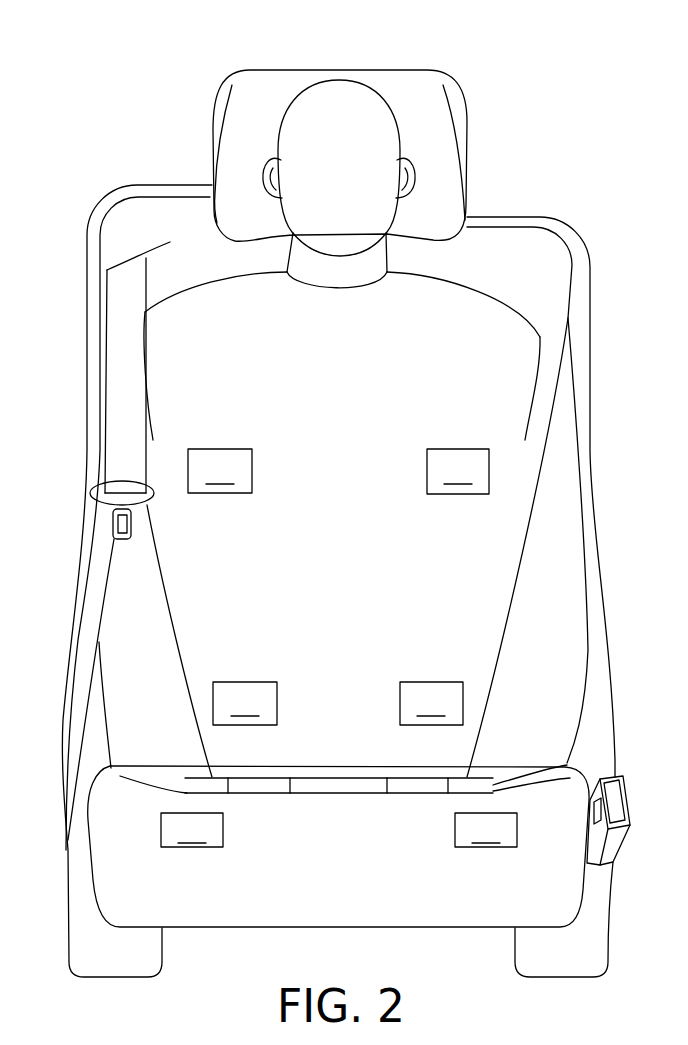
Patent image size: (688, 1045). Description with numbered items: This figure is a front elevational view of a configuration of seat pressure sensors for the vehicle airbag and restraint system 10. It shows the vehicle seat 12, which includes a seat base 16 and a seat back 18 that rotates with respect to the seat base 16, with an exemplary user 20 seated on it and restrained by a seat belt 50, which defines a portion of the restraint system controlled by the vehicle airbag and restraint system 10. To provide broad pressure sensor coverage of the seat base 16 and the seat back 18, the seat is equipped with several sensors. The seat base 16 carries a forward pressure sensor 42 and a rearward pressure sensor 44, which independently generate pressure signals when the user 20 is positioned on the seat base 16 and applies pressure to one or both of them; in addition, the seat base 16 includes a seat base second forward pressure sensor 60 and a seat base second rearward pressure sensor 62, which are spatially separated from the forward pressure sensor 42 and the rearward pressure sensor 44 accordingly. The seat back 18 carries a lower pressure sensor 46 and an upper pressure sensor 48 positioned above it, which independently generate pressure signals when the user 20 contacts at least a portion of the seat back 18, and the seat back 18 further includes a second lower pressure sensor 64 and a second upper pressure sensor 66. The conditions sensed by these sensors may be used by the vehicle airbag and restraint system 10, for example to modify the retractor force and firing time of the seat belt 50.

The vehicle airbag and restraint system 10 is at (487, 84).
The vehicle seat 12 is at (352, 579).
The seat base 16 is at (552, 910).
The seat back 18 is at (593, 527).
The user 20 is at (308, 110).
The forward pressure sensor 42 is at (486, 830).
The rearward pressure sensor 44 is at (493, 785).
The lower pressure sensor 46 is at (431, 703).
The upper pressure sensor 48 is at (458, 471).
The seat belt 50 is at (123, 337).
The seat base second forward pressure sensor 60 is at (192, 830).
The seat base second rearward pressure sensor 62 is at (197, 777).
The second lower pressure sensor 64 is at (245, 703).
The second upper pressure sensor 66 is at (220, 471).